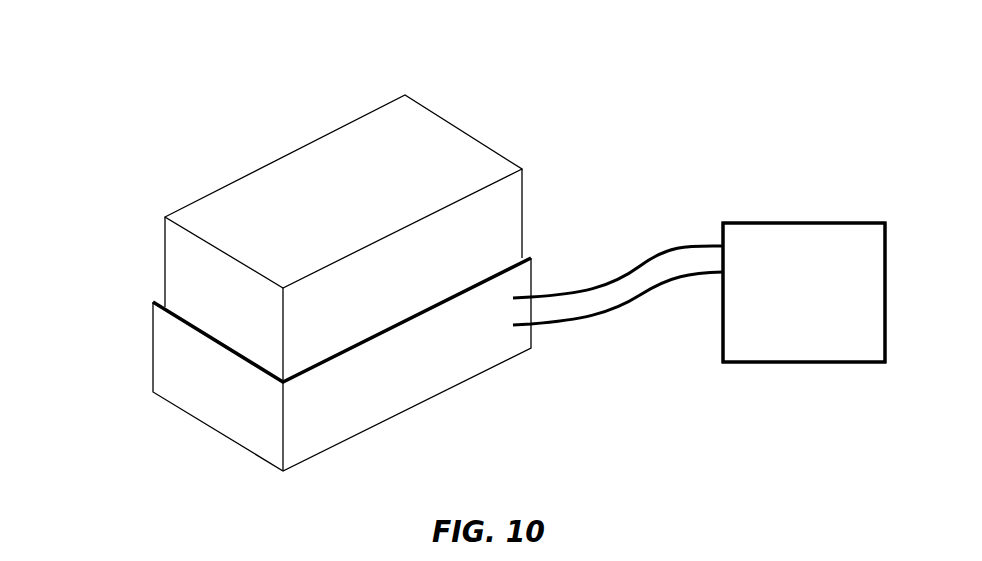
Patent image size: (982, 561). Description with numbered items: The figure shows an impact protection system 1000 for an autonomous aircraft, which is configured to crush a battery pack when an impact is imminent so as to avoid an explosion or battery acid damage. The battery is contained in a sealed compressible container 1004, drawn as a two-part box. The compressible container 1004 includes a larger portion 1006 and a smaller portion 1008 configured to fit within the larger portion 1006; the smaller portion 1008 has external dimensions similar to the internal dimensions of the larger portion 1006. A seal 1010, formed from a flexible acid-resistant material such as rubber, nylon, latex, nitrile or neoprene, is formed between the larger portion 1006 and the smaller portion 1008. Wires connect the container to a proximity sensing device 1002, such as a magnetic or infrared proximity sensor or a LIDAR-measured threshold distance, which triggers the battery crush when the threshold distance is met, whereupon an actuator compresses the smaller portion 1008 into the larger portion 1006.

The impact protection system 1000 is at (610, 168).
The proximity sensing device 1002 is at (797, 323).
The sealed compressible container 1004 is at (173, 188).
The larger portion 1006 is at (178, 357).
The smaller portion 1008 is at (318, 185).
The seal 1010 is at (159, 302).